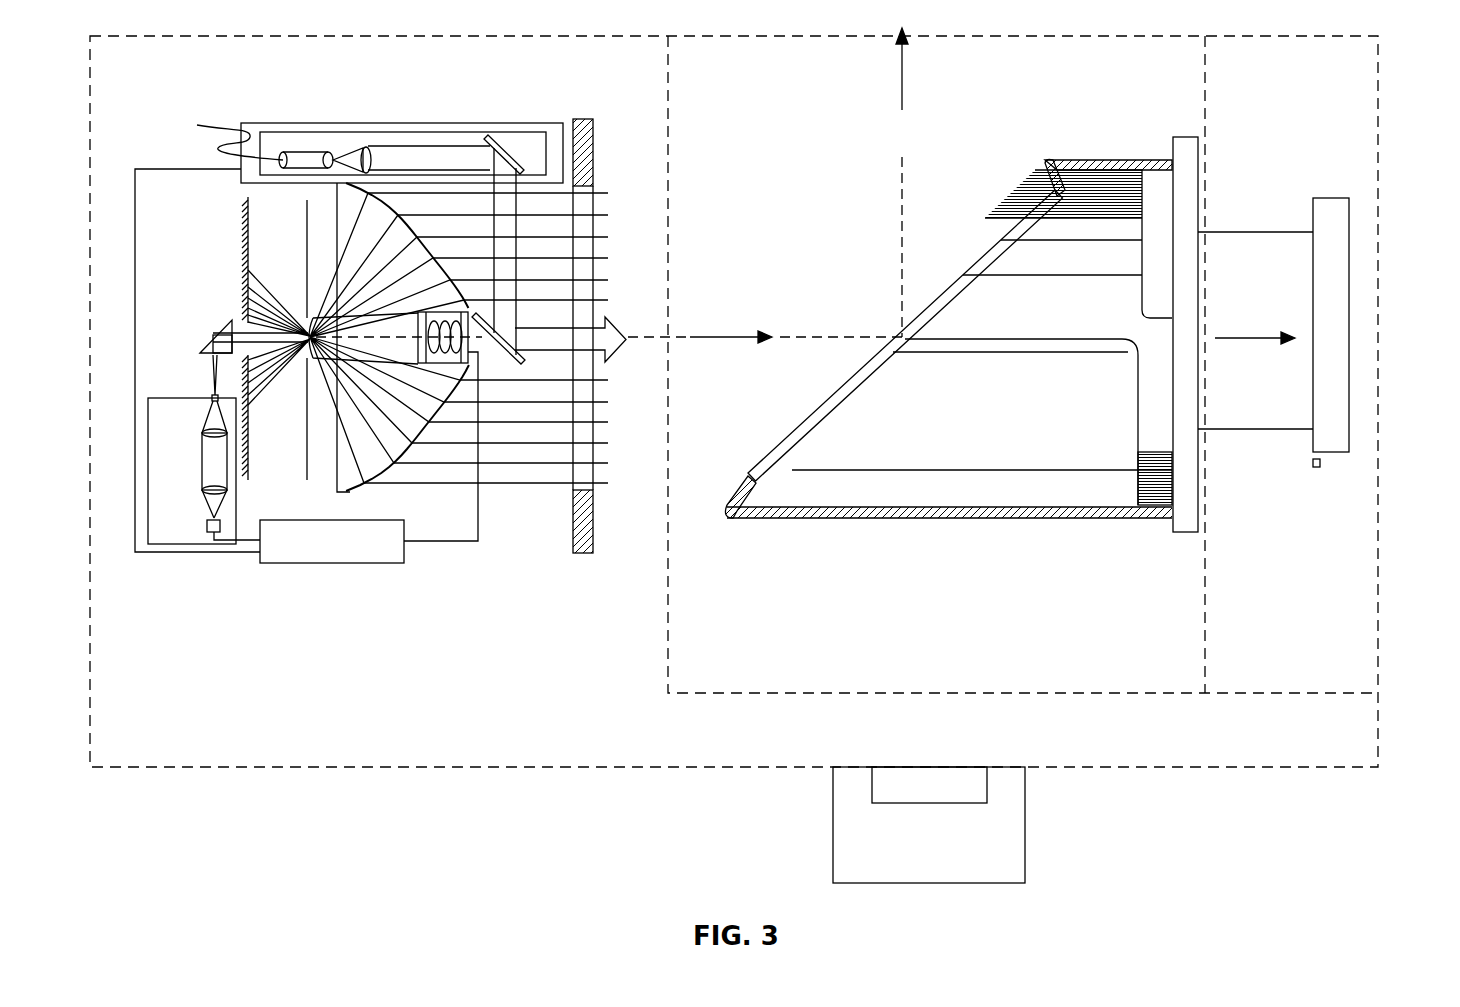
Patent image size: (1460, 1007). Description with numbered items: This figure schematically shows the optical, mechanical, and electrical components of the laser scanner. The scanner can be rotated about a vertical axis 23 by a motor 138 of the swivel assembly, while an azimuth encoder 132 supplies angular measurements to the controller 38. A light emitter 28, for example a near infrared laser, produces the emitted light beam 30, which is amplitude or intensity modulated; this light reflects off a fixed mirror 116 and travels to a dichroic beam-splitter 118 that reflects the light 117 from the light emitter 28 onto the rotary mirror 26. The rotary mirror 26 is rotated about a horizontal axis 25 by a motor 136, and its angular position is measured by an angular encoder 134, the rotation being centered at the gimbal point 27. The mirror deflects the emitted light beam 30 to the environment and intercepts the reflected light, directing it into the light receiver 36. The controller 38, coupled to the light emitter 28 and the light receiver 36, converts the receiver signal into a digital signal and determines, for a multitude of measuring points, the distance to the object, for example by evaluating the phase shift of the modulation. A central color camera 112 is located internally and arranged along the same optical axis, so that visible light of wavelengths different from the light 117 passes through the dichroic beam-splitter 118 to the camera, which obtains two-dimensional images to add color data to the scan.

The vertical axis 23 is at (904, 88).
The horizontal axis 25 is at (1240, 337).
The rotary mirror 26 is at (1020, 224).
The gimbal point 27 is at (902, 339).
The light emitter 28 is at (305, 152).
The emitted light beam 30 is at (714, 334).
The light receiver 36 is at (188, 484).
The controller 38 is at (297, 565).
The central color camera 112 is at (430, 367).
The fixed mirror 116 is at (506, 150).
The light 117 is at (503, 248).
The dichroic beam-splitter 118 is at (512, 362).
The azimuth encoder 132 is at (987, 785).
The angular encoder 134 is at (1350, 320).
The motor 136 is at (1322, 462).
The motor 138 is at (1025, 850).